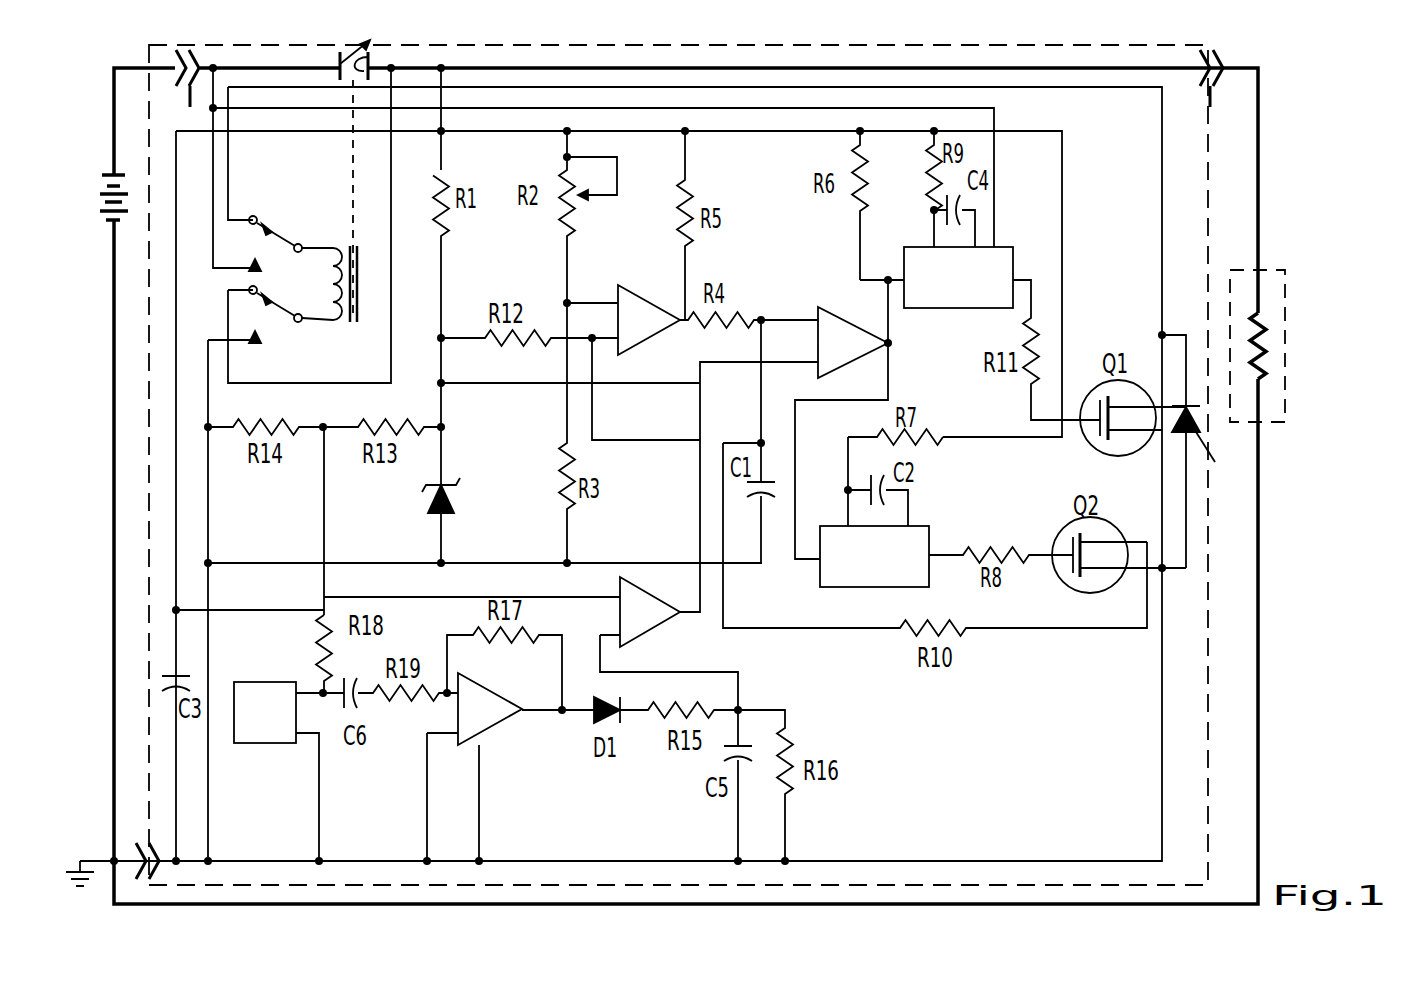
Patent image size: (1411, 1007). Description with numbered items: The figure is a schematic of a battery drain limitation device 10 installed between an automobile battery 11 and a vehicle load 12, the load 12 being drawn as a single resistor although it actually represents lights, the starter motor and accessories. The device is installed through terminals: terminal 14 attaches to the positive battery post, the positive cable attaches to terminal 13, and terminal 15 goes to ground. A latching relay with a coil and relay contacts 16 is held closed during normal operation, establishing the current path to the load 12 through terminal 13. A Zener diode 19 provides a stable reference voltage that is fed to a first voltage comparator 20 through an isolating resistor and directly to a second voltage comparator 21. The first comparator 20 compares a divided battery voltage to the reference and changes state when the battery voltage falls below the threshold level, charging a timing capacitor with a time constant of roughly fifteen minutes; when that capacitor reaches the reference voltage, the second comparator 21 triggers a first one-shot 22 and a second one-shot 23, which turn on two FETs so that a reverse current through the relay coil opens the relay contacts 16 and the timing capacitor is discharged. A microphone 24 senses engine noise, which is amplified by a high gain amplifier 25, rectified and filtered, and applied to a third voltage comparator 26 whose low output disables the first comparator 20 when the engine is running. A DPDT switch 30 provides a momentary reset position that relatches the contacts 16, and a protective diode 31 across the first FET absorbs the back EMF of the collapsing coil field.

The battery drain limitation device 10 is at (1278, 105).
The battery 11 is at (105, 175).
The vehicle load 12 is at (1268, 270).
The terminal 13 is at (1224, 60).
The terminal 14 is at (179, 85).
The terminal 15 is at (128, 850).
The relay contacts 16 is at (371, 49).
The Zener diode 19 is at (450, 507).
The first voltage comparator 20 is at (652, 308).
The second voltage comparator 21 is at (850, 325).
The first one-shot 22 is at (1010, 258).
The second one-shot 23 is at (920, 542).
The microphone 24 is at (280, 682).
The high gain amplifier 25 is at (488, 684).
The third voltage comparator 26 is at (637, 635).
The DPDT switch 30 is at (279, 272).
The protective diode 31 is at (1206, 451).